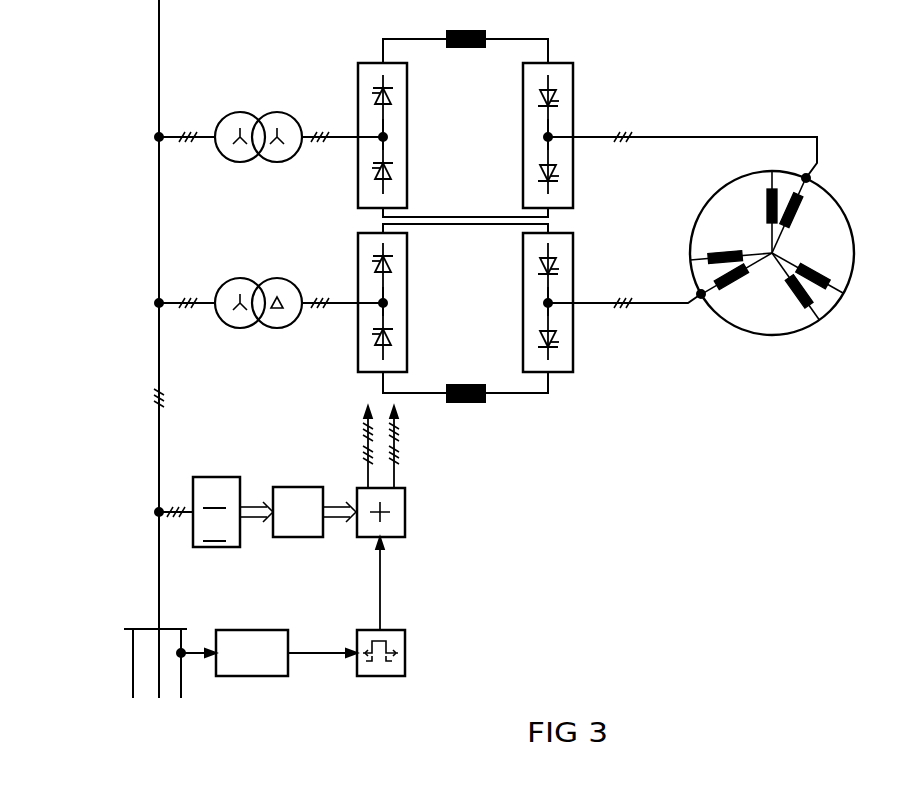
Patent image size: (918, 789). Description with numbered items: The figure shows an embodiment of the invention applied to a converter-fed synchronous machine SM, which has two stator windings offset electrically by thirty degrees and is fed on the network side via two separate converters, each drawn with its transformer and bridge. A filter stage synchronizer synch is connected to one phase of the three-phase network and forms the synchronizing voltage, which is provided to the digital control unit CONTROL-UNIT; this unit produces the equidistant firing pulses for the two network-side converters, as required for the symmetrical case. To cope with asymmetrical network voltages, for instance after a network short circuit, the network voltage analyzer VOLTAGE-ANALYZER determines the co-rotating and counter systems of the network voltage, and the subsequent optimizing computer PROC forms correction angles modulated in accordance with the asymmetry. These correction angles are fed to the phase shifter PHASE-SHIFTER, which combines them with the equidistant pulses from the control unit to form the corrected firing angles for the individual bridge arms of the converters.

The synchronous machine SM is at (748, 335).
The network voltage analyzer VOLTAGE-ANALYZER is at (200, 477).
The optimizing computer PROC is at (293, 487).
The phase shifter PHASE-SHIFTER is at (368, 478).
The filter stage synchronizer synch is at (315, 655).
The digital control unit CONTROL-UNIT is at (405, 653).